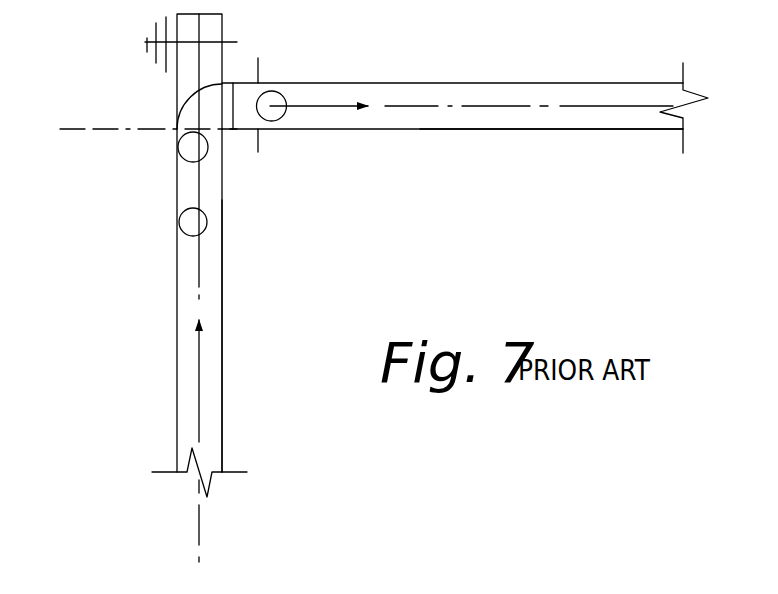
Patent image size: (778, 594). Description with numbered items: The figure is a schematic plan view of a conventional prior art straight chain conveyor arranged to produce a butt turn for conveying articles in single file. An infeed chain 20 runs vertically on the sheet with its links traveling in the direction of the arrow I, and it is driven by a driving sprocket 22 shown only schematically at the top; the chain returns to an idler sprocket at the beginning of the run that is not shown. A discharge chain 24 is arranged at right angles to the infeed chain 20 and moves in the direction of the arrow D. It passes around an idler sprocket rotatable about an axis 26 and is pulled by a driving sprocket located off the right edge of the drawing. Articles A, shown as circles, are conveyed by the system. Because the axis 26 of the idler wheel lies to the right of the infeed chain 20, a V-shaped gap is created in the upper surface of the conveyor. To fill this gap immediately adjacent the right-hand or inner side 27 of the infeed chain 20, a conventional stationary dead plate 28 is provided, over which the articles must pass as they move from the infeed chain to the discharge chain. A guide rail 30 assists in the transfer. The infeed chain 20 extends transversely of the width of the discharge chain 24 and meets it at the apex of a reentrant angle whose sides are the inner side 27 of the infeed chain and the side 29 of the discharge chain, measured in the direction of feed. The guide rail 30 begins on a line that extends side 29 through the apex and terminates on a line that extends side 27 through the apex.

The infeed chain 20 is at (185, 358).
The driving sprocket 22 is at (142, 40).
The discharge chain 24 is at (510, 95).
The axis of idler sprocket 26 is at (258, 142).
The inner side of infeed chain 27 is at (222, 290).
The stationary dead plate 28 is at (228, 97).
The side of discharge chain 29 is at (495, 130).
The guide rail 30 is at (187, 97).
The articles A is at (280, 98).
The arrow indicating discharge chain direction D is at (328, 103).
The arrow indicating infeed chain direction I is at (200, 396).